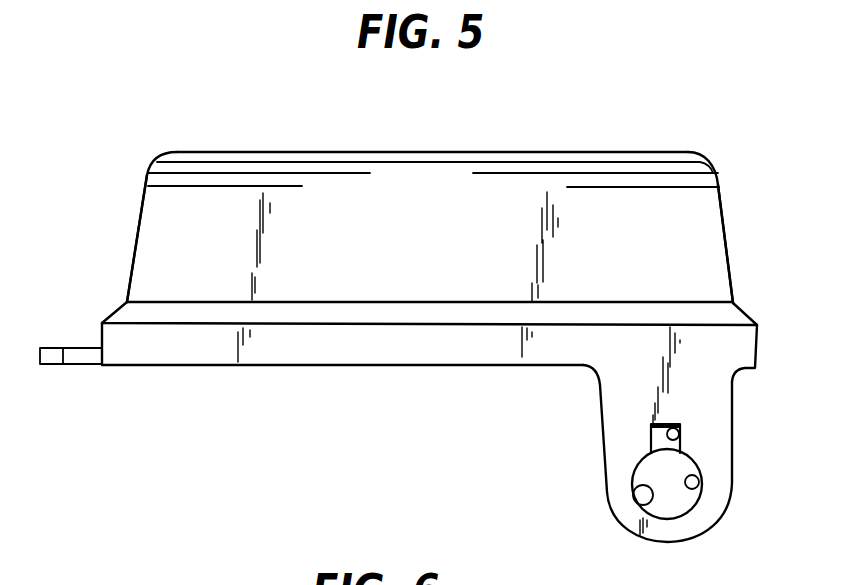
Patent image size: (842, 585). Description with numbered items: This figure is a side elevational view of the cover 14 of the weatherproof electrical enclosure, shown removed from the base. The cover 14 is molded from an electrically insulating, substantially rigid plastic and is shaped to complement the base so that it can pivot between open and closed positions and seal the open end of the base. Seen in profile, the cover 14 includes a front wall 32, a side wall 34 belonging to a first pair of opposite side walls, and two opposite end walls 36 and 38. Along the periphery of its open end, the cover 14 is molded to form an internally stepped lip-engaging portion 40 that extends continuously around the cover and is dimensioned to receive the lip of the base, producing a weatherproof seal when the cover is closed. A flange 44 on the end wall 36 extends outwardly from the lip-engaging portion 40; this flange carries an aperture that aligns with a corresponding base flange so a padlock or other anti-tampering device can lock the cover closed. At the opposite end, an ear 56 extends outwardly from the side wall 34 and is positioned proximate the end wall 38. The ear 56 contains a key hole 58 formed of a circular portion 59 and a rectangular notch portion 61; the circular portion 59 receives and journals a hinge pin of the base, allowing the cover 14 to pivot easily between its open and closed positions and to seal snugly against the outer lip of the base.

The cover 14 is at (584, 153).
The front wall 32 is at (280, 150).
The side wall 34 is at (410, 168).
The end wall 36 is at (138, 224).
The end wall 38 is at (727, 243).
The lip-engaging portion 40 is at (362, 352).
The flange 44 is at (57, 366).
The ear 56 is at (602, 458).
The key hole 58 is at (646, 500).
The circular portion 59 is at (694, 487).
The rectangular notch portion 61 is at (677, 434).